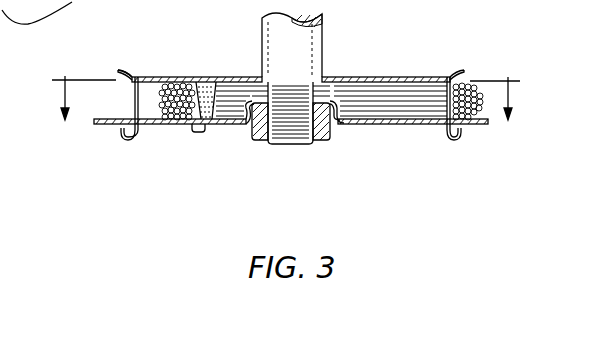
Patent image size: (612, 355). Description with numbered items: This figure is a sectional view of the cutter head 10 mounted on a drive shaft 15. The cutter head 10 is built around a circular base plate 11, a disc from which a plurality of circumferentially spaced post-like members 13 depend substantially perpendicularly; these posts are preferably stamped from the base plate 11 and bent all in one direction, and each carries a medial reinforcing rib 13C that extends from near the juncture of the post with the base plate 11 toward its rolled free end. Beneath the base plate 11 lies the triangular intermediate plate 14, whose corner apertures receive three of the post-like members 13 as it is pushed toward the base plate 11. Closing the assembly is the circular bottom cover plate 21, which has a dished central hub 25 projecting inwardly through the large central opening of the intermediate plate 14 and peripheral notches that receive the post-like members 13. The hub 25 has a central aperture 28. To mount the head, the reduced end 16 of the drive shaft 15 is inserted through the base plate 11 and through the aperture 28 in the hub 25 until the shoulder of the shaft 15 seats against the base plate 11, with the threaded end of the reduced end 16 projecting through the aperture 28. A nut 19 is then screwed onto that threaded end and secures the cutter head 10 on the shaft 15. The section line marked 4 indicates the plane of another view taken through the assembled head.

The section line 4- 4 is at (286, 111).
The cutter head 10 is at (432, 60).
The base plate 11 is at (385, 77).
The post-like members 13 is at (140, 95).
The medial reinforcing rib 13C is at (130, 97).
The intermediate plate 14 is at (100, 124).
The drive shaft 15 is at (318, 36).
The reduced end 16 is at (290, 146).
The nut 19 is at (334, 128).
The cover plate 21 is at (178, 126).
The hub 25 is at (226, 98).
The central aperture 28 is at (318, 100).